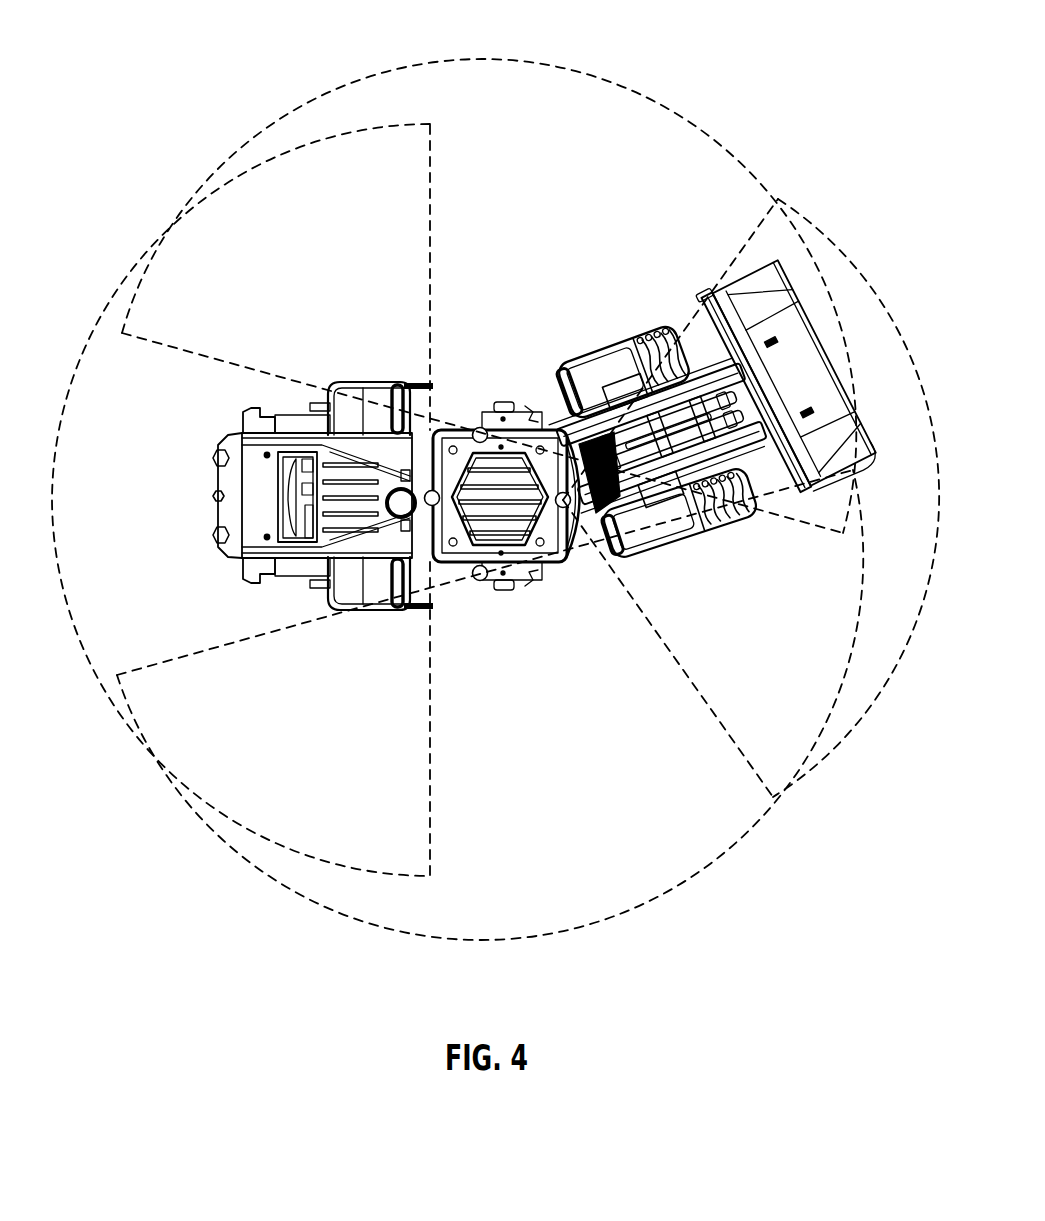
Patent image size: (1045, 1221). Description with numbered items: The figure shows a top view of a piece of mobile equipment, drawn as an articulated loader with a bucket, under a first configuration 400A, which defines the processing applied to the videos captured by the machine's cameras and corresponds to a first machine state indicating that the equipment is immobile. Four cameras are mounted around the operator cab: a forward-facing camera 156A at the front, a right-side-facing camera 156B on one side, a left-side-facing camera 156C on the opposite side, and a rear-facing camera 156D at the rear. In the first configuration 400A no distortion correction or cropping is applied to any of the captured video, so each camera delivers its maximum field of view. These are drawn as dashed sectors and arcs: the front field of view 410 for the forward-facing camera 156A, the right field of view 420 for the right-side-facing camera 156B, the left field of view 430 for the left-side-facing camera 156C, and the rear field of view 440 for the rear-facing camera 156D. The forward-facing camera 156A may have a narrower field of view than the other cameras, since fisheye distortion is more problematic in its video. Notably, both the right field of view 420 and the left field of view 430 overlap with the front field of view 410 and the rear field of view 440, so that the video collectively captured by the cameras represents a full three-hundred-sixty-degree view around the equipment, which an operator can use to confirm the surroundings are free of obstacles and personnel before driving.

The first configuration 400A is at (181, 66).
The forward-facing camera 156A is at (568, 508).
The right-side-facing camera 156B is at (483, 580).
The left-side-facing camera 156C is at (485, 428).
The rear-facing camera 156D is at (427, 492).
The front field of view 410 is at (858, 266).
The right field of view 420 is at (370, 933).
The left field of view 430 is at (664, 104).
The rear field of view 440 is at (112, 694).